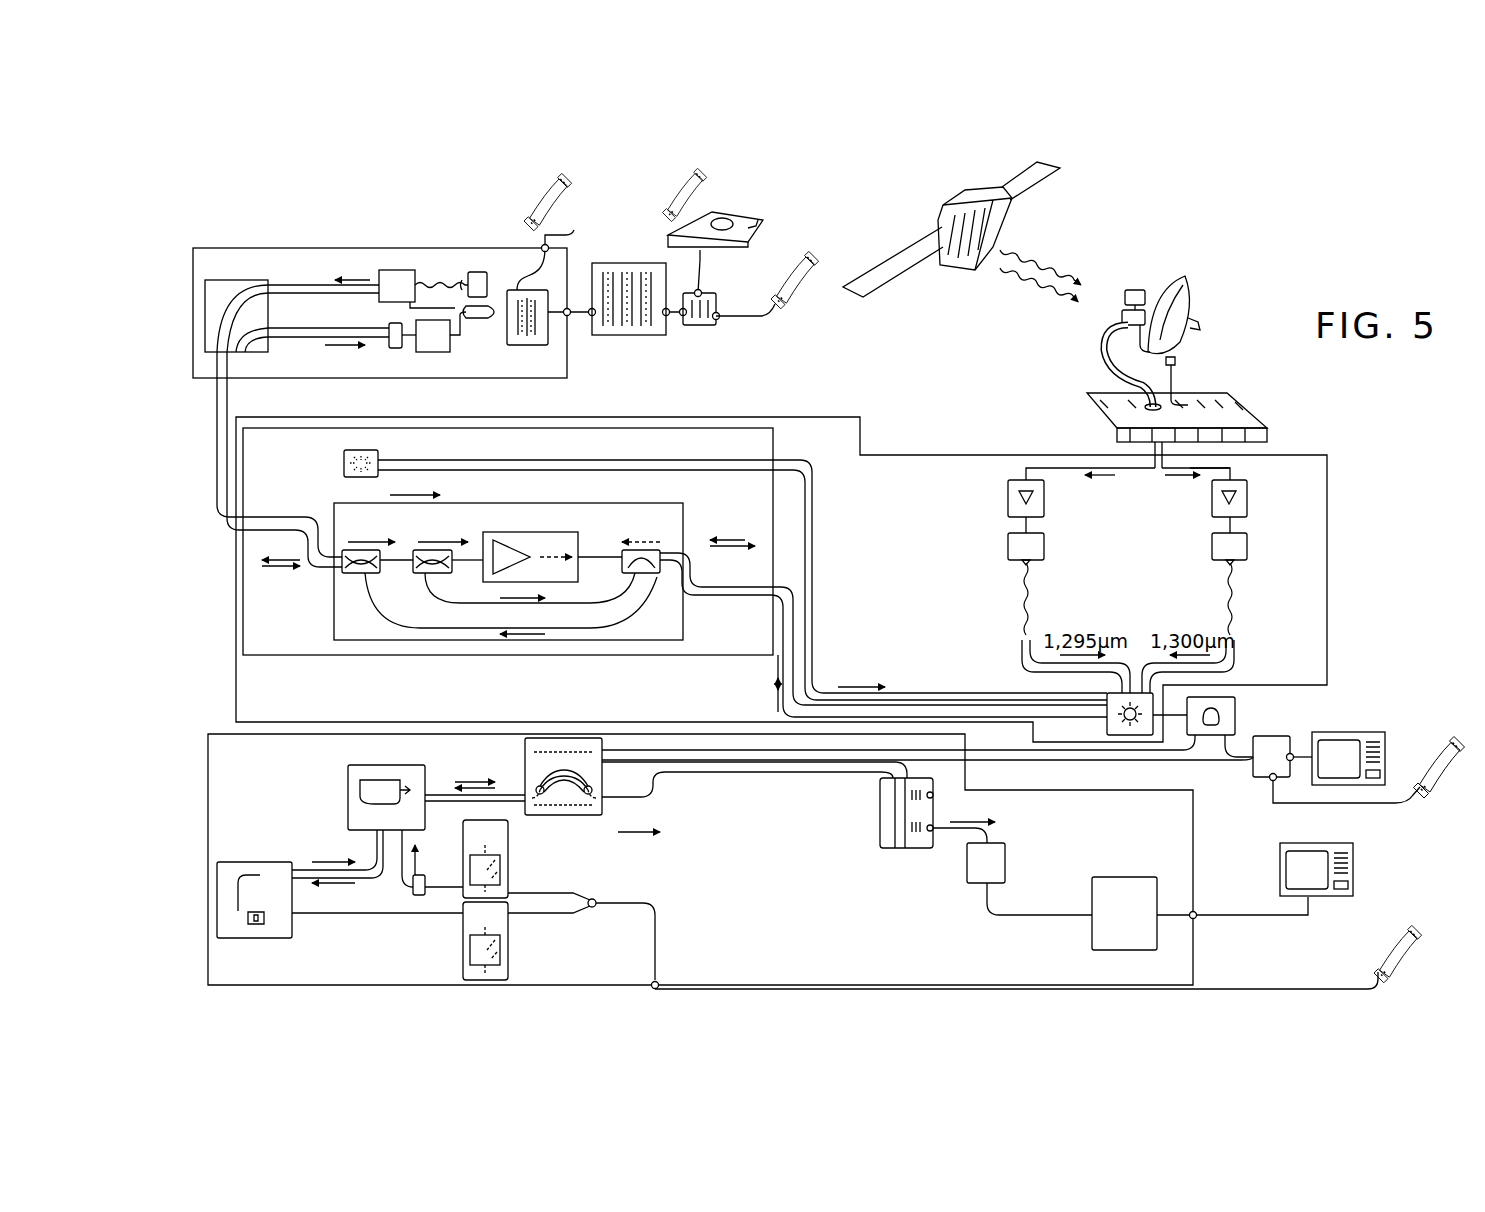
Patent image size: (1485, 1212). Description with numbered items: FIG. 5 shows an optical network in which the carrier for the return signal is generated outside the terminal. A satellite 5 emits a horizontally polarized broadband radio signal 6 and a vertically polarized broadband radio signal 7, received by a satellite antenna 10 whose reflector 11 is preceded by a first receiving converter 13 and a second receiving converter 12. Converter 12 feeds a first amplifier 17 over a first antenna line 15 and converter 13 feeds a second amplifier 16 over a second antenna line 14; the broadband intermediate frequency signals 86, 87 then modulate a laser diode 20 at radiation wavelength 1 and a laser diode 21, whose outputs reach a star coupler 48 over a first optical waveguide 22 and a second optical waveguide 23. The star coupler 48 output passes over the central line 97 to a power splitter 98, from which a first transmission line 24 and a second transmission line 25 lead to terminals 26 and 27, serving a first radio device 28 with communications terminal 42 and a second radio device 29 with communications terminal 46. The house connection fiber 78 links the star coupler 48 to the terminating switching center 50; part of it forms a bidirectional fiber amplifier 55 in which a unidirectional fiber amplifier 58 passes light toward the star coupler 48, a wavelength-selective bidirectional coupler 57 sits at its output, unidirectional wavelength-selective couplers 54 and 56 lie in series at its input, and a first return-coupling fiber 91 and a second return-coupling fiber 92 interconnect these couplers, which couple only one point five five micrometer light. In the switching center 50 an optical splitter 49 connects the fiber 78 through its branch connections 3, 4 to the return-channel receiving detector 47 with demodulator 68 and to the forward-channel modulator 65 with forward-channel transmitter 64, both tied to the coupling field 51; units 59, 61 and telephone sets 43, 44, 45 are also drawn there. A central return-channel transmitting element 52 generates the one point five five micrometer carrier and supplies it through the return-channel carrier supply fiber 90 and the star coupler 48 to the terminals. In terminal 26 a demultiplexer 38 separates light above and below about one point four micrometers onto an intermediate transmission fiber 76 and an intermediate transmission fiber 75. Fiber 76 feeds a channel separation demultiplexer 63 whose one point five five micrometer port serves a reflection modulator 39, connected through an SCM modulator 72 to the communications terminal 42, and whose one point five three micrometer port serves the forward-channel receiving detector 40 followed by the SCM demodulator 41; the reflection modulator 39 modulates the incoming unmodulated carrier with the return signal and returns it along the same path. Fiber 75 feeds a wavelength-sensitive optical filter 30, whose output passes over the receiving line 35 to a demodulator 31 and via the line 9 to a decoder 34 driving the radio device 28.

The radiation wavelength 1 is at (292, 928).
The 1.53 µm fiber 3 is at (323, 272).
The 1.55 µm fiber 4 is at (328, 349).
The satellite 5 is at (1000, 230).
The horizontally polarized broadband radio signal 6 is at (1052, 266).
The vertically polarized broadband radio signal 7 is at (1035, 290).
The line 9 is at (1048, 915).
The satellite antenna 10 is at (1186, 382).
The reflector 11 is at (1188, 310).
The second receiving converter 12 is at (1135, 290).
The first receiving converter 13 is at (1150, 300).
The second antenna line 14 is at (1064, 468).
The first antenna line 15 is at (1212, 463).
The second amplifier 16 is at (1008, 506).
The first amplifier 17 is at (1247, 507).
The laser diode 20 is at (1008, 548).
The laser diode 21 is at (1247, 548).
The first optical waveguide 22 is at (1020, 655).
The second optical waveguide 23 is at (1235, 655).
The first transmission line 24 is at (1068, 757).
The second transmission line 25 is at (1238, 767).
The terminal 26 is at (1193, 885).
The terminal 27 is at (1280, 745).
The first radio device 28 is at (1343, 897).
The second radio device 29 is at (1368, 732).
The wavelength-sensitive optical filter 30 is at (885, 830).
The demodulator 31 is at (967, 868).
The decoder 34 is at (1125, 877).
The receiving line 35 is at (992, 836).
The demultiplexer 38 is at (572, 815).
The reflection modulator 39 is at (240, 862).
The forward-channel receiving detector 40 is at (418, 895).
The SCM demodulator 41 is at (508, 855).
The communications terminal 42 is at (1396, 925).
The telephone handset 43 is at (570, 208).
The telephone 44 is at (716, 214).
The telephone handset 45 is at (792, 256).
The communications terminal 46 is at (1452, 742).
The return-channel receiving detector 47 is at (395, 348).
The star coupler 48 is at (1108, 700).
The optical splitter 49 is at (213, 280).
The terminating switching center 50 is at (255, 248).
The coupling field 51 is at (527, 345).
The return-channel transmitting element 52 is at (344, 458).
The unidirectional wavelength-selective coupler 54 is at (338, 575).
The bidirectional fiber amplifier 55 is at (592, 522).
The wavelength-selective coupler 56 is at (418, 550).
The wavelength-selective bidirectional coupler 57 is at (670, 548).
The unidirectional fiber amplifier 58 is at (520, 545).
The exchange 59 is at (636, 335).
The line interface 61 is at (700, 325).
The channel separation demultiplexer 63 is at (385, 770).
The forward-channel transmitter 64 is at (476, 272).
The forward-channel modulator 65 is at (404, 270).
The demodulator 68 is at (438, 352).
The SCM modulator 72 is at (508, 938).
The intermediate transmission fiber 75 is at (720, 772).
The intermediate transmission fiber 76 is at (512, 790).
The house connection fiber 78 is at (222, 492).
The broadband intermediate frequency signal 86 is at (1100, 489).
The broadband intermediate frequency signal 87 is at (1184, 489).
The return-channel carrier supply fiber 90 is at (815, 648).
The first return-coupling fiber 91 is at (600, 600).
The second return-coupling fiber 92 is at (582, 628).
The central line 97 is at (1172, 720).
The power splitter 98 is at (1235, 714).